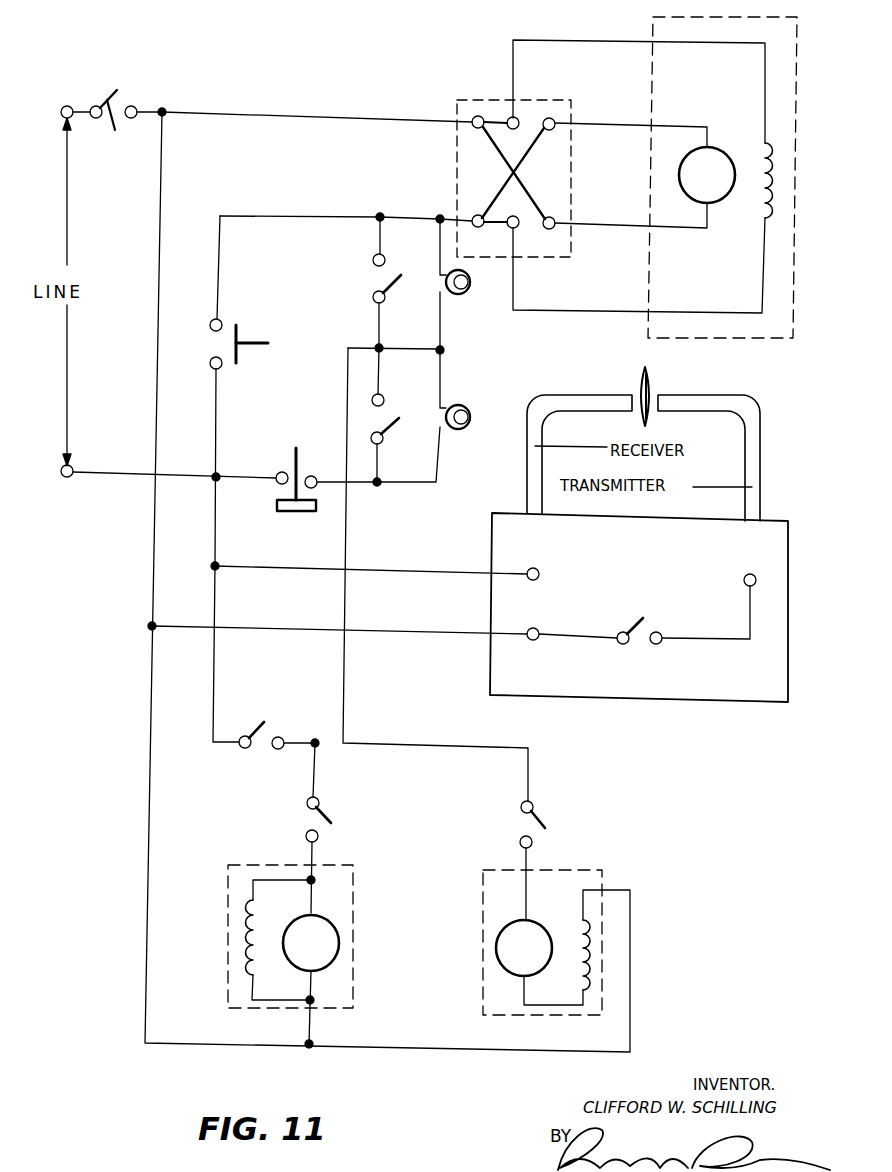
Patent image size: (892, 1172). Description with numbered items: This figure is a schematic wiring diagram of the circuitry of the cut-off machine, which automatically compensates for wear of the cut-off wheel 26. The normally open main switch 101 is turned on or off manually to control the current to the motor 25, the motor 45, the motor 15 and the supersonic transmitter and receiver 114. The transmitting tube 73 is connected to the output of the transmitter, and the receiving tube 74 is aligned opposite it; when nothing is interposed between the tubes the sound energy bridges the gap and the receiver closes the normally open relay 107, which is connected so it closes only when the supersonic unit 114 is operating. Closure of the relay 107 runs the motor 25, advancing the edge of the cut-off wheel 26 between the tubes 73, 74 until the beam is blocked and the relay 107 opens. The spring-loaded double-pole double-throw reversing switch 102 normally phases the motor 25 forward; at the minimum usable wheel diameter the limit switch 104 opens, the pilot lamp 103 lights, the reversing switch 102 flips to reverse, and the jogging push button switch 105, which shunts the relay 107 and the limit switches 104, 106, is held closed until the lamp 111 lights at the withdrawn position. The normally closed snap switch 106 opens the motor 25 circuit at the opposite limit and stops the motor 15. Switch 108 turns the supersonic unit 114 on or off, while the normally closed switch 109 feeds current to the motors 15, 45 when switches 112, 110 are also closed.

The main switch 101 is at (113, 123).
The motor reversing switch 102 is at (496, 99).
The pilot lamp 103 is at (470, 282).
The limit switch 104 is at (390, 282).
The push button switch 105 is at (268, 346).
The snap switch 106 is at (392, 428).
The relay 107 is at (294, 464).
The switch 108 is at (637, 620).
The switch 109 is at (256, 726).
The switch 110 is at (321, 812).
The lamp 111 is at (470, 417).
The switch 112 is at (530, 825).
The supersonic transmitter and receiver 114 is at (601, 696).
The motor 25 is at (650, 36).
The cut-off wheel 26 is at (640, 390).
The transmitting tube 73 is at (703, 402).
The receiving tube 74 is at (601, 402).
The motor 45 is at (268, 862).
The motor 15 is at (565, 868).